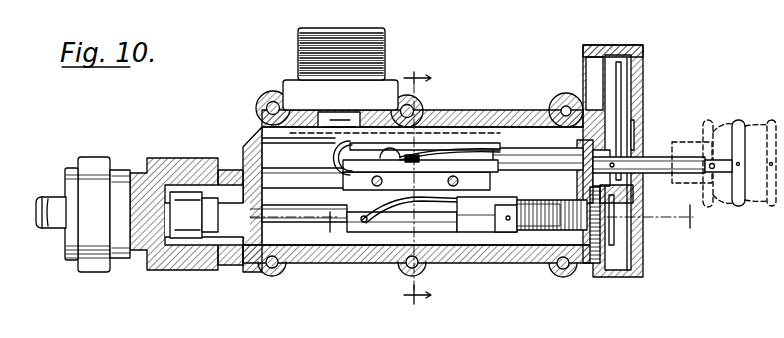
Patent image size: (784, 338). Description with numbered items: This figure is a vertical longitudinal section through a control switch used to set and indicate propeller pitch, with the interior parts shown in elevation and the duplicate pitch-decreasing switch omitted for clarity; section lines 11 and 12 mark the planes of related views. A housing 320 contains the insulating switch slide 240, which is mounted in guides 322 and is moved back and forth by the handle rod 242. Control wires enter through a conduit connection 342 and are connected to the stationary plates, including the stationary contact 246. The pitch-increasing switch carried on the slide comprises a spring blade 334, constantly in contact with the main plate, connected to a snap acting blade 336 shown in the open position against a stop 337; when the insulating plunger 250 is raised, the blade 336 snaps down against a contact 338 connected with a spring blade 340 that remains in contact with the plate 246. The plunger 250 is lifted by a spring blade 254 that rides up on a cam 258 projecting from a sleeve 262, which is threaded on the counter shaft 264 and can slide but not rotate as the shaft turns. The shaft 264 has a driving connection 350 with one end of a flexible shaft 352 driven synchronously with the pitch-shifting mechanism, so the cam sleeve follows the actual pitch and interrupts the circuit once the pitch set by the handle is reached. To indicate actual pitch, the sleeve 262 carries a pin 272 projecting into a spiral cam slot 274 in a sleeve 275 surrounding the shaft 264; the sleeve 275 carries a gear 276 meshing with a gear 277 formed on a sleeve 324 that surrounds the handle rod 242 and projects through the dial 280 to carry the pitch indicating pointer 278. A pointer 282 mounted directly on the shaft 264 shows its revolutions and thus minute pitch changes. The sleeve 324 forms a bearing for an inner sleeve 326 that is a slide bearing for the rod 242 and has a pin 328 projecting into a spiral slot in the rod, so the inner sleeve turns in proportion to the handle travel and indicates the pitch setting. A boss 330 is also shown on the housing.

The housing 320 is at (261, 129).
The conduit connection 342 is at (383, 37).
The boss 330 is at (562, 157).
The gear 276 is at (589, 265).
The dial 280 is at (640, 60).
The pointer 278 is at (622, 84).
The sleeve 324 is at (629, 104).
The pointer 282 is at (633, 126).
The inner sleeve 326 is at (612, 150).
The pin 328 is at (605, 163).
The gear 277 is at (613, 185).
The handle 242 is at (683, 153).
The insulating slide 240 is at (491, 181).
The spring blade 334 is at (455, 147).
The insulating plunger 250 is at (430, 162).
The snap acting blade 336 is at (413, 168).
The stationary contact 246 is at (342, 137).
The stop 337 is at (338, 154).
The spring blade 340 is at (334, 165).
The contact 338 is at (346, 173).
The guides 322 is at (278, 189).
The cam 258 is at (398, 224).
The spring blade 254 is at (365, 220).
The sleeve 262 is at (457, 233).
The pin 272 is at (506, 220).
The sleeve 275 is at (540, 228).
The spiral cam slot 274 is at (560, 208).
The shaft 264 is at (301, 223).
The driving connection 350 is at (198, 258).
The flexible shaft 352 is at (39, 228).
The section line 12- 12 is at (417, 189).
The section line 11- 11 is at (483, 218).